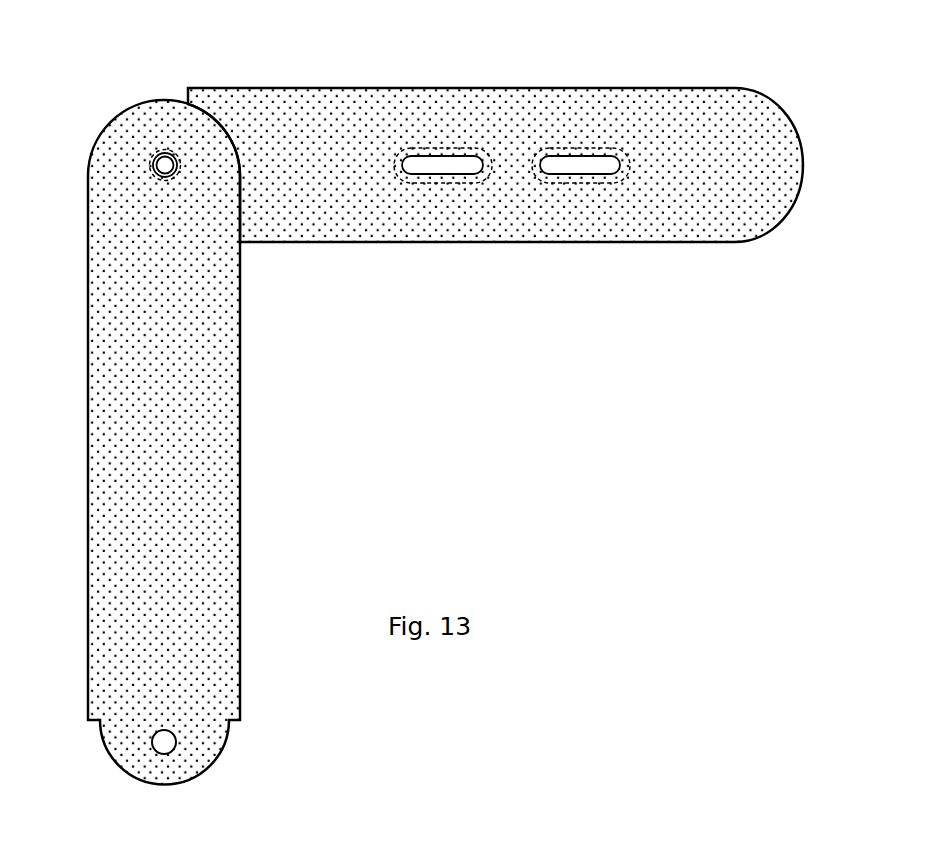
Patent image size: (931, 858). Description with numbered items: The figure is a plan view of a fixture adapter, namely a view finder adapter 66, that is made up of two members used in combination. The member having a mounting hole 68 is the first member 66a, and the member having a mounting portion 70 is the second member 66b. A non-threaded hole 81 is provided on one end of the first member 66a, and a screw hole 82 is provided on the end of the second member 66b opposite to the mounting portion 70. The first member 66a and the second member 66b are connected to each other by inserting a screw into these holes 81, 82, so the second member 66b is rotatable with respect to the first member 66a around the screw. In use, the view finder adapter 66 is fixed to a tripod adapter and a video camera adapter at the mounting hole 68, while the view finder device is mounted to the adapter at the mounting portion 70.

The view finder adapter 66 is at (445, 401).
The first member 66a is at (698, 66).
The second member 66b is at (252, 424).
The mounting hole 68 is at (386, 186).
The mounting portion 70 is at (143, 746).
The non-threaded hole 81 is at (160, 142).
The screw hole 82 is at (157, 164).